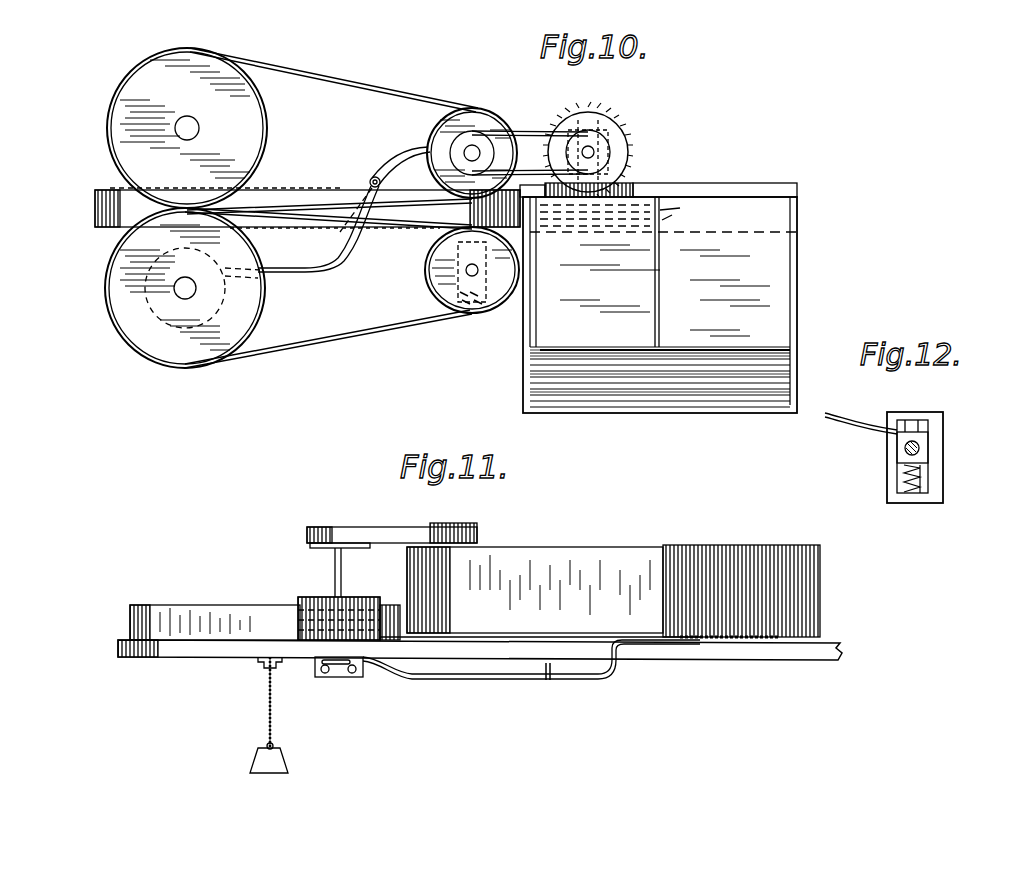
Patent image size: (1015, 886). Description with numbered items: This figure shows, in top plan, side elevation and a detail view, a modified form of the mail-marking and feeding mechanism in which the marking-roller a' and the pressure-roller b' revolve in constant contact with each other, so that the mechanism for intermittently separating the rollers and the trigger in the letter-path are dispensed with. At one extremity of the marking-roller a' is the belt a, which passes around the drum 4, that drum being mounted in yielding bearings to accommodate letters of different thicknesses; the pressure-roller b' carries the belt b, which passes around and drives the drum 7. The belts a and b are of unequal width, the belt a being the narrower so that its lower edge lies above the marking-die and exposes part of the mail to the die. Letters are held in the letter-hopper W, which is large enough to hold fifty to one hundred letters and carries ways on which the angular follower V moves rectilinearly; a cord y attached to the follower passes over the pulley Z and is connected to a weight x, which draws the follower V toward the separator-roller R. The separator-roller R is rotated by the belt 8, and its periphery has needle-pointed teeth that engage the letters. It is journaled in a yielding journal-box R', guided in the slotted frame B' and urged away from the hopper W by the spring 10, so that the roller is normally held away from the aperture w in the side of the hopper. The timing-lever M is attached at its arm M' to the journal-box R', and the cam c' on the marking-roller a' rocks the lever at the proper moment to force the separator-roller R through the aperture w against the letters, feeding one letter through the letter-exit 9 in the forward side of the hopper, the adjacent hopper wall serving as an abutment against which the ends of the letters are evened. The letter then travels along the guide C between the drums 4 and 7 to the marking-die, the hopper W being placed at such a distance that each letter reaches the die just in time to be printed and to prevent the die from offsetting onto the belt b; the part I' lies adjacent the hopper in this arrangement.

In FIG. 10, the belt a is at (328, 286).
In FIG. 10, the marking-roller a' is at (288, 288).
In FIG. 10, the belt b is at (292, 128).
In FIG. 11, the belt b is at (613, 591).
In FIG. 10, the pressure-roller b' is at (156, 166).
In FIG. 10, the cam c' is at (202, 288).
In FIG. 10, the rail C is at (307, 209).
In FIG. 10, the drum 4 is at (472, 270).
In FIG. 10, the drum 7 is at (472, 153).
In FIG. 10, the belt 8 is at (505, 130).
In FIG. 11, the belt 8 is at (387, 535).
In FIG. 10, the letter-exit 9 is at (525, 192).
In FIG. 10, the spring 10 is at (612, 180).
In FIG. 12, the spring 10 is at (920, 478).
In FIG. 10, the timing-lever M is at (409, 182).
In FIG. 11, the timing-lever M is at (531, 675).
In FIG. 10, the arm of timing-lever M' is at (628, 95).
In FIG. 11, the arm of timing-lever M' is at (341, 687).
In FIG. 12, the arm of timing-lever M' is at (877, 416).
In FIG. 10, the separator-roller R is at (602, 150).
In FIG. 11, the separator-roller R is at (341, 603).
In FIG. 11, the journal-box R' is at (327, 685).
In FIG. 12, the journal-box R' is at (934, 447).
In FIG. 12, the slotted frame B' is at (896, 457).
In FIG. 10, the aperture w is at (660, 183).
In FIG. 10, the letter-hopper W is at (660, 305).
In FIG. 10, the cord y is at (666, 272).
In FIG. 10, the inlet I' is at (619, 215).
In FIG. 10, the follower V is at (797, 232).
In FIG. 11, the follower V is at (222, 612).
In FIG. 11, the pulley Z is at (266, 675).
In FIG. 11, the weight x is at (290, 760).